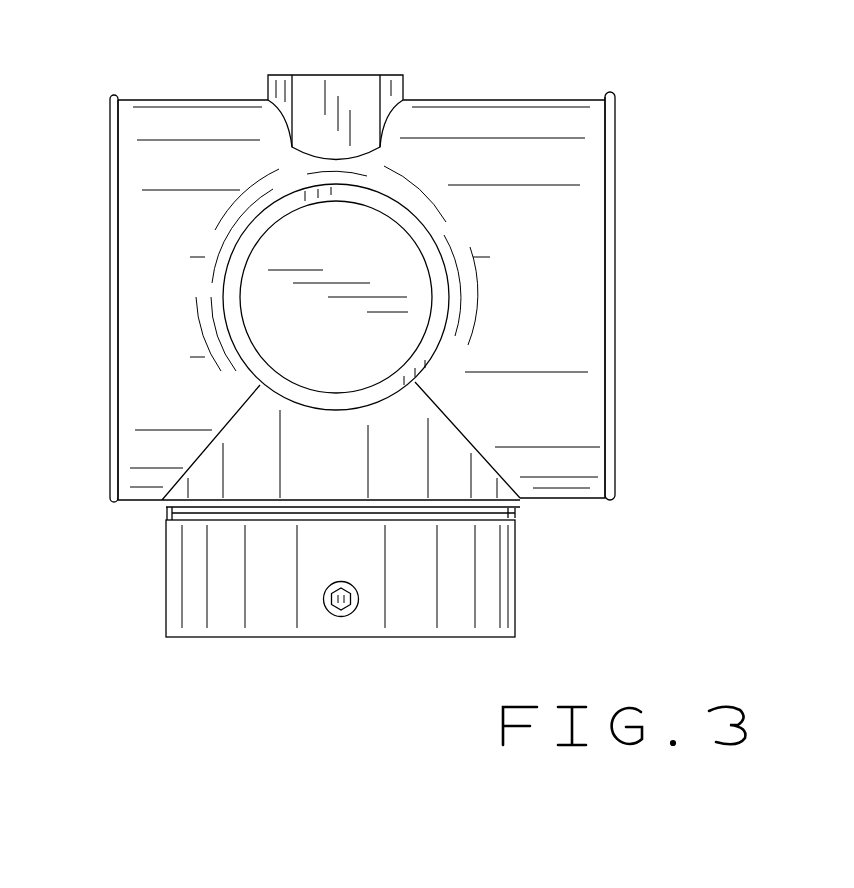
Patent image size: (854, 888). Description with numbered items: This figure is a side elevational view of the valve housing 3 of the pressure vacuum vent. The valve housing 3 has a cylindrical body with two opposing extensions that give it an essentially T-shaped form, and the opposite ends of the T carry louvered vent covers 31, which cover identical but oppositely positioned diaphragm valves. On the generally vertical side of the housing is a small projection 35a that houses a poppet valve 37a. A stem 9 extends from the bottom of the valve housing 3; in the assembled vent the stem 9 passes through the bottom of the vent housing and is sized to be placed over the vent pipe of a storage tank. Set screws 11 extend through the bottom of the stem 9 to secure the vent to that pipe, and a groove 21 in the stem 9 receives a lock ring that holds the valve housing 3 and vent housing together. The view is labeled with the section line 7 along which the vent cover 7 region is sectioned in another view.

The valve housing 3 is at (375, 358).
The vent cover 7 is at (330, 98).
The stem 9 is at (520, 600).
The set screws 11 is at (352, 612).
The groove 21 is at (522, 508).
The louvered vent covers 31 is at (110, 96).
The projection 35a is at (433, 221).
The poppet valve 37a is at (370, 281).